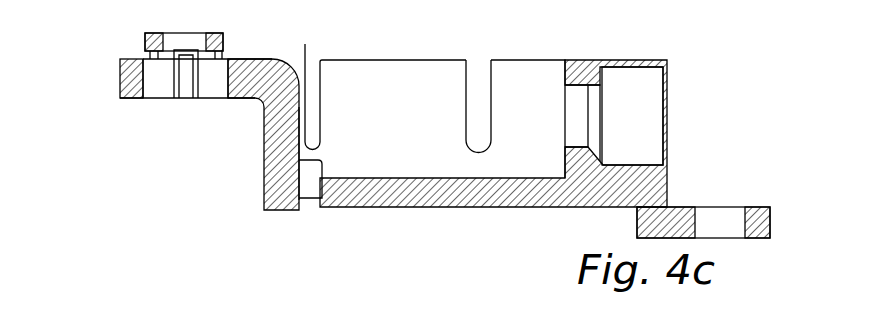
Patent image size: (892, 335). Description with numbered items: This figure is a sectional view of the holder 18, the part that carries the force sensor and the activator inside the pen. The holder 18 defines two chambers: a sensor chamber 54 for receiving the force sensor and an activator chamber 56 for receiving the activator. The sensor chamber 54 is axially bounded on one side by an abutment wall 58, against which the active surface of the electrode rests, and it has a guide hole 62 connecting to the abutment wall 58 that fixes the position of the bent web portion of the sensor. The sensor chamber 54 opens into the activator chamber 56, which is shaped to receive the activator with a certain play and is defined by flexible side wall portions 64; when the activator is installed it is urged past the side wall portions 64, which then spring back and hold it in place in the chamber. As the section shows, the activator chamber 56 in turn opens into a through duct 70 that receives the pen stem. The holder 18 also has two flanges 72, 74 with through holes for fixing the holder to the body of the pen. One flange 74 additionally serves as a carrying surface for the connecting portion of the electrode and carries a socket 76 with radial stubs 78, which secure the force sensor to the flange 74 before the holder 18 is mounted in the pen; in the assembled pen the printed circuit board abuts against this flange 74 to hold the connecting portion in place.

The holder 18 is at (683, 92).
The sensor chamber 54 is at (318, 125).
The activator chamber 56 is at (488, 115).
The abutment wall 58 is at (305, 44).
The guide hole 62 is at (300, 187).
The flexible side wall portions 64 is at (395, 77).
The through duct 70 is at (577, 84).
The flange 72 is at (759, 207).
The flange 74 is at (120, 78).
The socket 76 is at (226, 54).
The radial stubs 78 is at (226, 51).